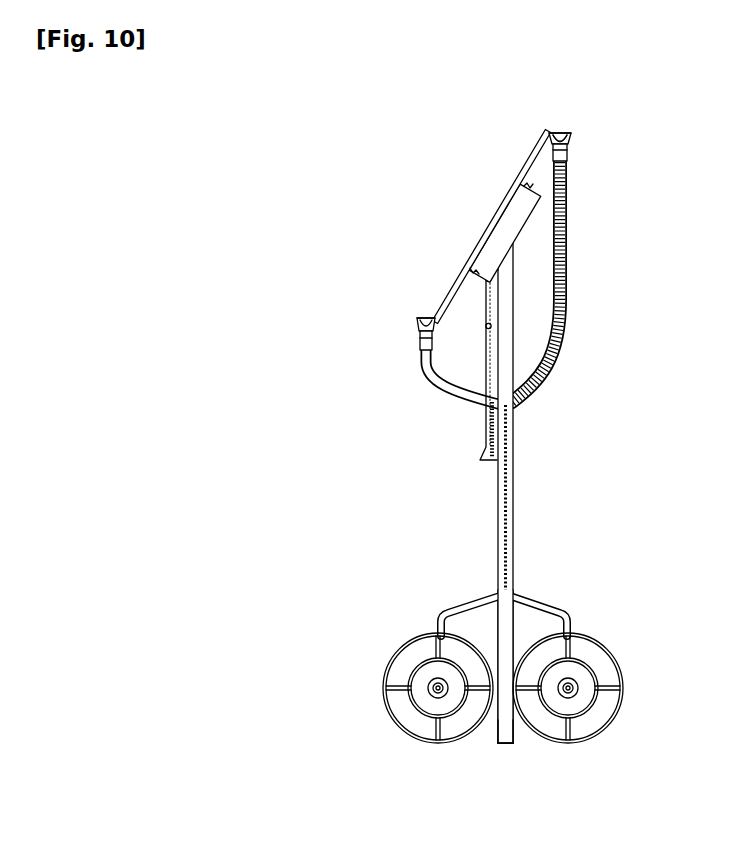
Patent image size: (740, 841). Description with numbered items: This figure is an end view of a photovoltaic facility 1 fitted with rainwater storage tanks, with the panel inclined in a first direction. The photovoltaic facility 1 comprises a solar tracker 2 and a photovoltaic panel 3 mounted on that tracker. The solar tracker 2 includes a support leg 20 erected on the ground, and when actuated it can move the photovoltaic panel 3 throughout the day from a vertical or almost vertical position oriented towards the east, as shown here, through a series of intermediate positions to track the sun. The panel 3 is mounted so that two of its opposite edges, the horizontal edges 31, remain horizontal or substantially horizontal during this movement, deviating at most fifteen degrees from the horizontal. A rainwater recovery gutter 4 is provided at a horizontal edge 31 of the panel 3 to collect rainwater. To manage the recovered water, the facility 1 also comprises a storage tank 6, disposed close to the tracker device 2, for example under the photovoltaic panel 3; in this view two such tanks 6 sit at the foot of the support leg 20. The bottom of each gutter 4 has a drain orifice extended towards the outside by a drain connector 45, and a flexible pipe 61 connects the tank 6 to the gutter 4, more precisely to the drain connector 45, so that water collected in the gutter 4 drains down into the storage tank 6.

The photovoltaic facility 1 is at (410, 203).
The solar tracker 2 is at (473, 420).
The photovoltaic panel 3 is at (482, 228).
The horizontal edges 31 is at (548, 131).
The rainwater recovery gutter 4 is at (578, 143).
The drain connector 45 is at (568, 148).
The storage tank 6 is at (405, 638).
The flexible pipe 61 is at (558, 295).
The support leg 20 is at (497, 728).